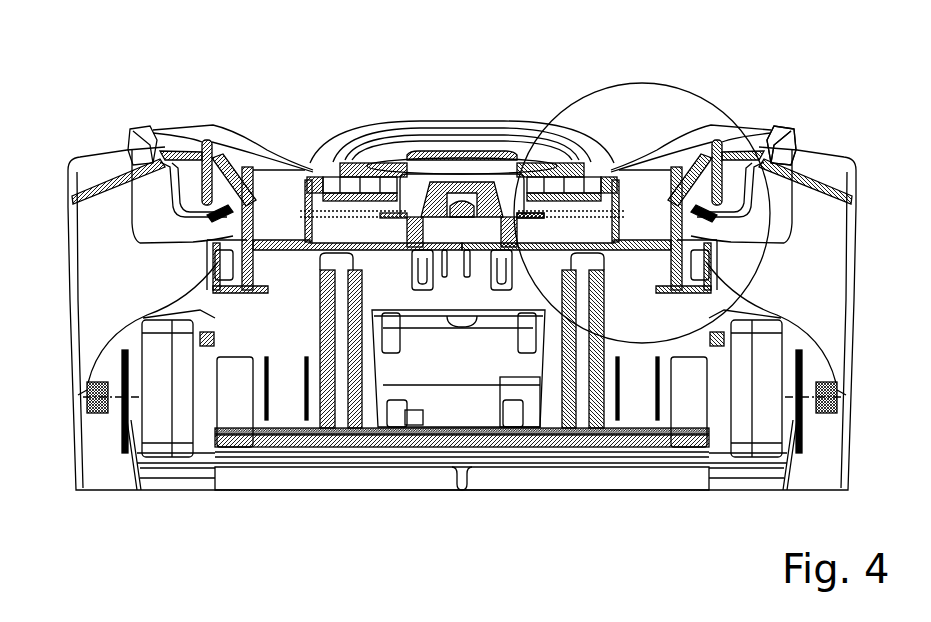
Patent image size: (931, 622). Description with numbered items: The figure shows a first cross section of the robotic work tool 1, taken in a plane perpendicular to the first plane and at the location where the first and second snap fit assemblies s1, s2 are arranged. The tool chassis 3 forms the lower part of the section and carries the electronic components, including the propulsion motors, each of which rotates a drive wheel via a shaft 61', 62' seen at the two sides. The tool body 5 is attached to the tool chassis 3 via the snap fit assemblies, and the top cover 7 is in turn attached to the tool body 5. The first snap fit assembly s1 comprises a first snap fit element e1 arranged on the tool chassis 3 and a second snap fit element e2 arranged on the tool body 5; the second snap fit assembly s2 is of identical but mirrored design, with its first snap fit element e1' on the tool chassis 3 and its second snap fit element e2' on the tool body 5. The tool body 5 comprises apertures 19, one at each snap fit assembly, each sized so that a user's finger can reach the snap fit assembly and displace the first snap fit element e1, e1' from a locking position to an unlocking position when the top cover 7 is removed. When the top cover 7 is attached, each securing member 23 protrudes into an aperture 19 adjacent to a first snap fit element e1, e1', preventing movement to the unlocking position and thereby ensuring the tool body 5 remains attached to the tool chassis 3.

The robotic work tool 1 is at (140, 60).
The tool chassis 3 is at (569, 440).
The tool body 5 is at (833, 173).
The top cover 7 is at (787, 127).
The aperture 19 is at (200, 142).
The securing member 23 is at (132, 148).
The first snap fit assembly s1 is at (683, 110).
The second snap fit assembly s2 is at (236, 115).
The first snap fit element e1 is at (665, 158).
The first snap fit element e1' is at (264, 159).
The second snap fit element e2 is at (741, 214).
The second snap fit element e2' is at (182, 220).
The shaft 61' is at (843, 423).
The shaft 62' is at (80, 419).